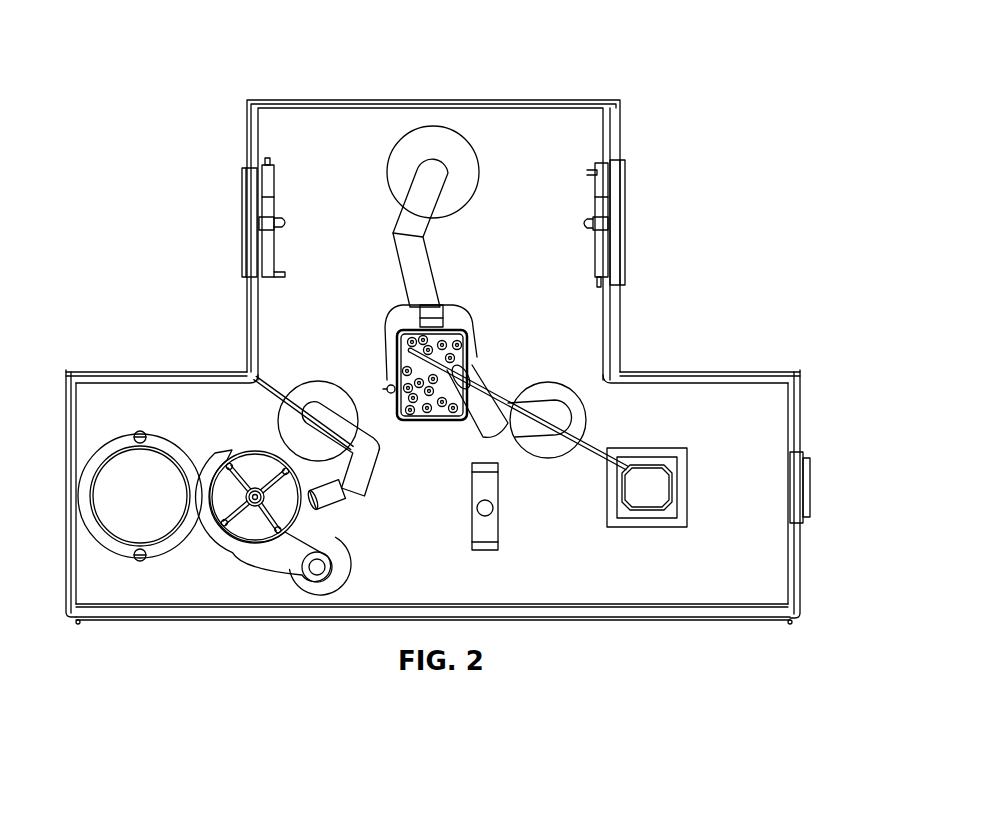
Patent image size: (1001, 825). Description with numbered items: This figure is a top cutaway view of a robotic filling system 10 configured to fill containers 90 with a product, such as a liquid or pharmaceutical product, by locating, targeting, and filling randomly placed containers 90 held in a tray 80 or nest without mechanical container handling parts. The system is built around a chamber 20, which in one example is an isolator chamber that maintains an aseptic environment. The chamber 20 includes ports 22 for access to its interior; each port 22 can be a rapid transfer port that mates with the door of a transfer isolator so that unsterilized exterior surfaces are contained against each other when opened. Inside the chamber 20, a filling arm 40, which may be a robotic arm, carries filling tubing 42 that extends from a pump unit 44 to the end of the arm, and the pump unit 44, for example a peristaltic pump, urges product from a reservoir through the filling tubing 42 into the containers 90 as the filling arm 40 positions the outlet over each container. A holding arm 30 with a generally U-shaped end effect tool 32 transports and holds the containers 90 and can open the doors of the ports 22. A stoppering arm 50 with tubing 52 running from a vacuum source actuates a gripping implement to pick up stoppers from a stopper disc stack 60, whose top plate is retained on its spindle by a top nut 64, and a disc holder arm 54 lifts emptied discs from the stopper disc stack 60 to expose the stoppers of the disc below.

The filling system 10 is at (502, 81).
The chamber 20 is at (438, 457).
The port 22 is at (160, 700).
The holding arm 30 is at (536, 186).
The end effect tool 32 is at (533, 324).
The filling arm 40 is at (559, 378).
The filling tubing 42 is at (606, 392).
The pump unit 44 is at (756, 462).
The stoppering arm 50 is at (377, 463).
The tubing 52 is at (363, 465).
The disc holder arm 54 is at (277, 557).
The stopper disc stack 60 is at (204, 431).
The top nut 64 is at (238, 478).
The tray 80 is at (388, 387).
The containers 90 is at (532, 352).